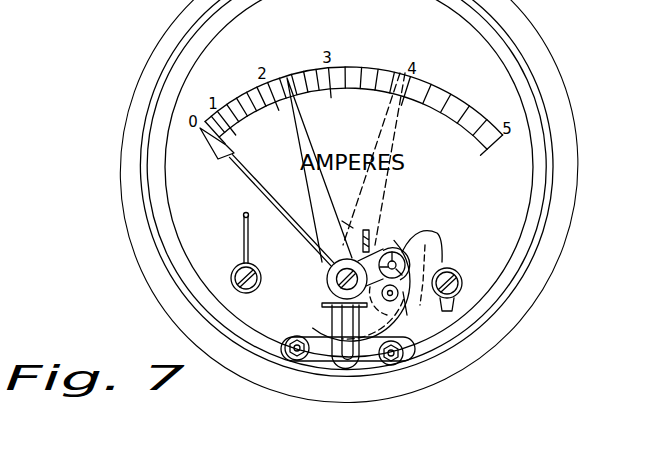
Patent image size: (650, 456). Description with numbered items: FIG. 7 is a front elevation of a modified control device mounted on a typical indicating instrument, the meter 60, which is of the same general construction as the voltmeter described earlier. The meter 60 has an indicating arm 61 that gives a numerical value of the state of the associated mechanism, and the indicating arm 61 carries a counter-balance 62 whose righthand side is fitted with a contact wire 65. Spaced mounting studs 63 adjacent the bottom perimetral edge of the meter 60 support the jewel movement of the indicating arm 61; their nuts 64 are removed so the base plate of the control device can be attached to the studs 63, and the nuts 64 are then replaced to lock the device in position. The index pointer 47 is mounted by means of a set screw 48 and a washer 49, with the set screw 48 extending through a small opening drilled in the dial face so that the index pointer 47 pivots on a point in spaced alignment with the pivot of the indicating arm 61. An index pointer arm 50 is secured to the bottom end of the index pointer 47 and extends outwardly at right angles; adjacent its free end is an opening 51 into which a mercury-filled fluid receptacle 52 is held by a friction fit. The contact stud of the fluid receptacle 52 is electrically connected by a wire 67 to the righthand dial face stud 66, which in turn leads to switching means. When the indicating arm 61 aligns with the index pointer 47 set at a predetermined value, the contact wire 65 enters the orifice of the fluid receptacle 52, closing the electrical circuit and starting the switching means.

The index pointer 47 is at (313, 185).
The set screw 48 is at (340, 277).
The washer 49 is at (298, 310).
The index pointer arm 50 is at (388, 326).
The opening 51 is at (407, 247).
The fluid receptacle 52 is at (407, 302).
The meter 60 is at (561, 54).
The indicating arm 61 is at (236, 171).
The counter-balance 62 is at (343, 221).
The mounting studs 63 is at (290, 354).
The nuts 64 is at (298, 357).
The contact wire 65 is at (390, 234).
The righthand dial face stud 66 is at (460, 278).
The wire 67 is at (448, 238).